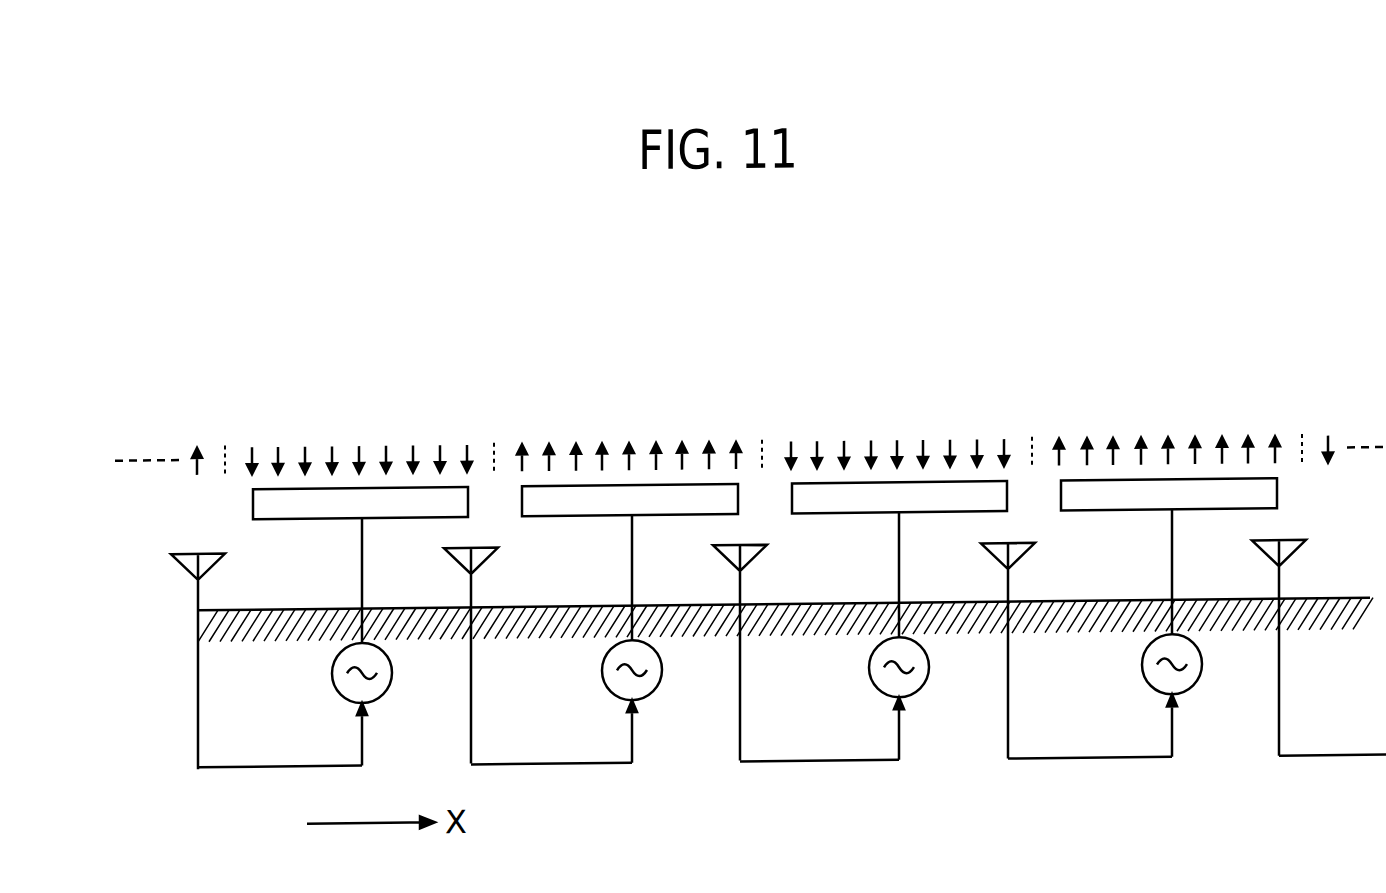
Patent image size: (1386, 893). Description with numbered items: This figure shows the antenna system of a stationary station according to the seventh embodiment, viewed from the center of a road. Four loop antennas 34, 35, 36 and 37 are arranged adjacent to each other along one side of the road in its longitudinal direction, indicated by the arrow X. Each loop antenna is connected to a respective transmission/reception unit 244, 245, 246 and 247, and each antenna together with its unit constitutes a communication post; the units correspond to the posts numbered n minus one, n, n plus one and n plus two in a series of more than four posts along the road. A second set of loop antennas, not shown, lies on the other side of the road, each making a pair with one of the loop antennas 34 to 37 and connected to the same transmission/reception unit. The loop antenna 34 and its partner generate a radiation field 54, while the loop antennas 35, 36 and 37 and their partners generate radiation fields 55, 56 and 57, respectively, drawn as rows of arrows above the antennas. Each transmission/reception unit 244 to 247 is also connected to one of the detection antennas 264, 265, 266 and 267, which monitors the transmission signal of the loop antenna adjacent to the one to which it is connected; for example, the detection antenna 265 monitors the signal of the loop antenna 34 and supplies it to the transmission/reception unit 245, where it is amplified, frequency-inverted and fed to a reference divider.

The loop antenna 34 is at (451, 492).
The loop antenna 35 is at (717, 492).
The loop antenna 36 is at (985, 493).
The loop antenna 37 is at (1254, 493).
The radiation field 54 is at (415, 453).
The radiation field 55 is at (684, 452).
The radiation field 56 is at (953, 452).
The radiation field 57 is at (1221, 450).
The transmission/reception unit 244 is at (388, 699).
The transmission/reception unit 245 is at (656, 696).
The transmission/reception unit 246 is at (931, 692).
The transmission/reception unit 247 is at (1196, 694).
The detection antenna 264 is at (216, 560).
The detection antenna 265 is at (498, 555).
The detection antenna 266 is at (767, 555).
The detection antenna 267 is at (1035, 556).